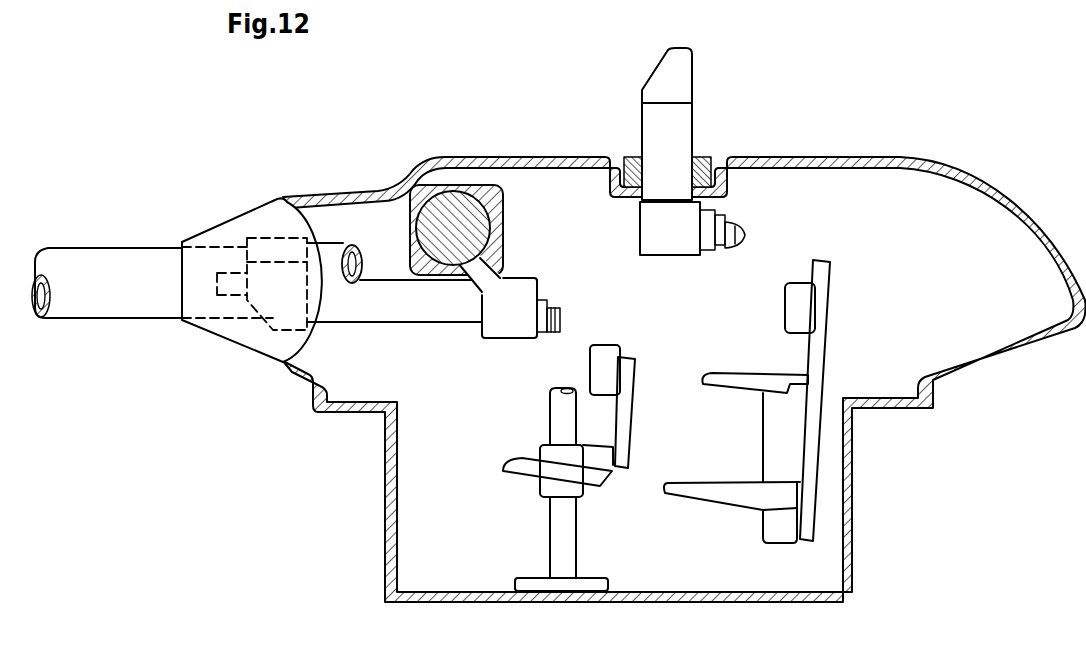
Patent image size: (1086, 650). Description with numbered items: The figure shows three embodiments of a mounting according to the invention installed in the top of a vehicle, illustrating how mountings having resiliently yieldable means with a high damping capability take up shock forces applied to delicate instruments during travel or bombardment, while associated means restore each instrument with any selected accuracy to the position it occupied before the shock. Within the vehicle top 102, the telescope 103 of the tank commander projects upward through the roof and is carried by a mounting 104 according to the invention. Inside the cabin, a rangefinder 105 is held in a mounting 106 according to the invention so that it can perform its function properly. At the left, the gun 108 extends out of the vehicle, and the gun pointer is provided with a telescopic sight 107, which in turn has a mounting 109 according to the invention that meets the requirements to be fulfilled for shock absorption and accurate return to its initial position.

The vehicle top 102 is at (935, 165).
The telescope 103 is at (685, 120).
The mounting 104 is at (705, 150).
The rangefinder 105 is at (495, 185).
The mounting 106 is at (416, 182).
The telescopic sight 107 is at (417, 310).
The gun 108 is at (118, 307).
The mounting 109 is at (265, 240).